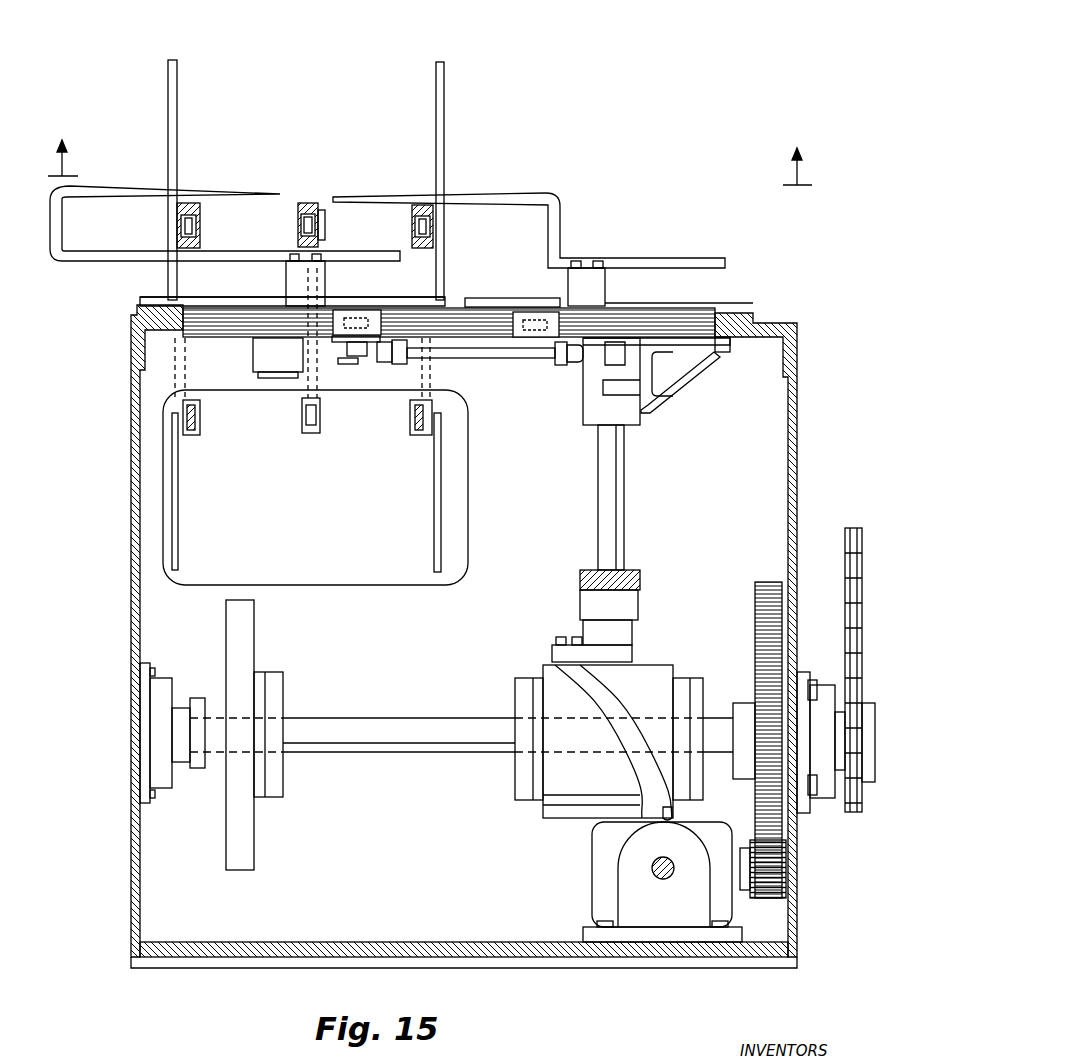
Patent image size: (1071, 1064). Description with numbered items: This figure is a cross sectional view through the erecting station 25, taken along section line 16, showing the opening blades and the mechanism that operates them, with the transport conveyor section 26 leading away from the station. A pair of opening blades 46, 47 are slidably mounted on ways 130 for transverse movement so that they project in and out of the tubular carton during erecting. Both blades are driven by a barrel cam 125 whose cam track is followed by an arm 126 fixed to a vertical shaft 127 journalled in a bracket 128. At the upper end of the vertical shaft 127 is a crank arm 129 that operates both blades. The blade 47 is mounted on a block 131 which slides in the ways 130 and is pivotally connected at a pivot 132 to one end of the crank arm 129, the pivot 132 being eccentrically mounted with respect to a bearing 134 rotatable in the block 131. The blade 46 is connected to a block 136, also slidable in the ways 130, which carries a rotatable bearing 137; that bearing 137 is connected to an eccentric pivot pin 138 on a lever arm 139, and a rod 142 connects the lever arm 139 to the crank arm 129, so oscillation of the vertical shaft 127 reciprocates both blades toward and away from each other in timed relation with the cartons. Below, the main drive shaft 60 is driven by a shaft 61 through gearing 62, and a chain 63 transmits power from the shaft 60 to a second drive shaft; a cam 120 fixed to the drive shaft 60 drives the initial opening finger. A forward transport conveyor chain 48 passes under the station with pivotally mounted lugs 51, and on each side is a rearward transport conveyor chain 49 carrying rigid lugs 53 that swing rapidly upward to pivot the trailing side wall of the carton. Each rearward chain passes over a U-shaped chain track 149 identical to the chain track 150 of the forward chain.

The section line 16- 16 is at (438, 162).
The erecting station 25 is at (668, 107).
The transport conveyor section 26 is at (235, 444).
The opening blade 46 is at (197, 188).
The opening blade 47 is at (493, 191).
The forward transport conveyor chain 48 is at (321, 420).
The rearward transport conveyor chain 49 is at (186, 440).
The lug 51 is at (326, 222).
The lug 53 is at (178, 62).
The main drive shaft 60 is at (402, 755).
The shaft 61 is at (664, 880).
The gearing 62 is at (748, 808).
The chain 63 is at (852, 528).
The cam 120 is at (256, 643).
The barrel cam 125 is at (655, 667).
The arm 126 is at (592, 660).
The vertical shaft 127 is at (626, 540).
The bracket 128 is at (641, 580).
The crank arm 129 is at (605, 348).
The ways 130 is at (766, 305).
The block 131 is at (510, 303).
The pivot 132 is at (524, 358).
The bearing 134 is at (553, 330).
The block 136 is at (357, 303).
The bearing 137 is at (390, 366).
The eccentric pivot pin 138 is at (330, 362).
The lever arm 139 is at (278, 358).
The rod 142 is at (468, 360).
The chain track 149 is at (187, 375).
The chain track 150 is at (303, 398).